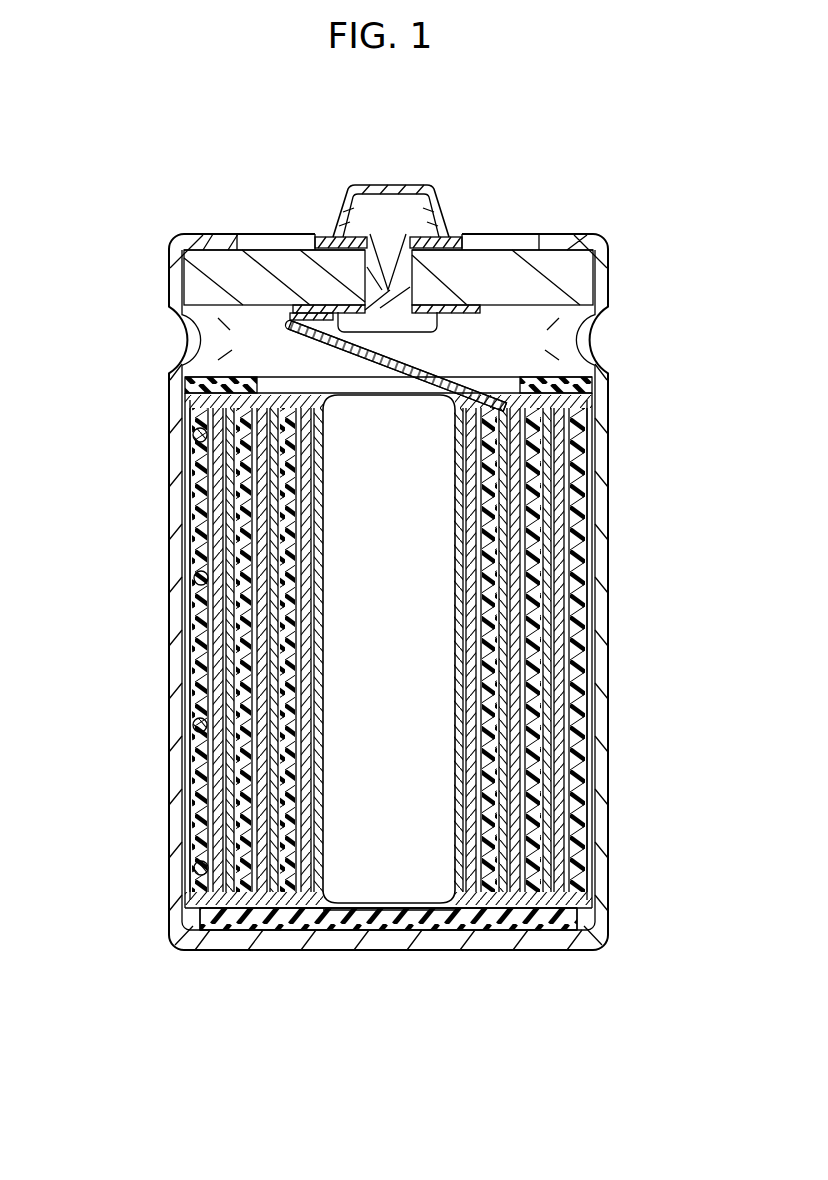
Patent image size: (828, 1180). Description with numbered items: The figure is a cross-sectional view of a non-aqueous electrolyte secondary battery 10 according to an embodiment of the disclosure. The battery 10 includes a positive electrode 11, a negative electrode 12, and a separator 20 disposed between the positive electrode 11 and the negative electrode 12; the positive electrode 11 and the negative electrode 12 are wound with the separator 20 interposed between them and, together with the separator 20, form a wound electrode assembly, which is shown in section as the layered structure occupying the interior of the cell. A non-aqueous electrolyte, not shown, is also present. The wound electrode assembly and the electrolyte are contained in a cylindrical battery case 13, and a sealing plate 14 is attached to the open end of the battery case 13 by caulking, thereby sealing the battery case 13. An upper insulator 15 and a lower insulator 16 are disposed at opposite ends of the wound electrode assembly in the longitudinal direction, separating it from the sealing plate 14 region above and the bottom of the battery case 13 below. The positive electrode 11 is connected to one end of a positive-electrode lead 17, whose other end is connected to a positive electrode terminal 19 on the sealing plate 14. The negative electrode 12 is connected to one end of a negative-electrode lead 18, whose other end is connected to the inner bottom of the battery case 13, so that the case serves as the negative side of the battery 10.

The non-aqueous electrolyte secondary battery 10 is at (583, 138).
The positive electrode 11 is at (218, 638).
The negative electrode 12 is at (186, 545).
The battery case 13 is at (609, 675).
The sealing plate 14 is at (490, 265).
The upper insulator 15 is at (547, 382).
The lower insulator 16 is at (503, 918).
The positive-electrode lead 17 is at (340, 346).
The negative-electrode lead 18 is at (185, 496).
The positive electrode terminal 19 is at (396, 185).
The separator 20 is at (192, 688).